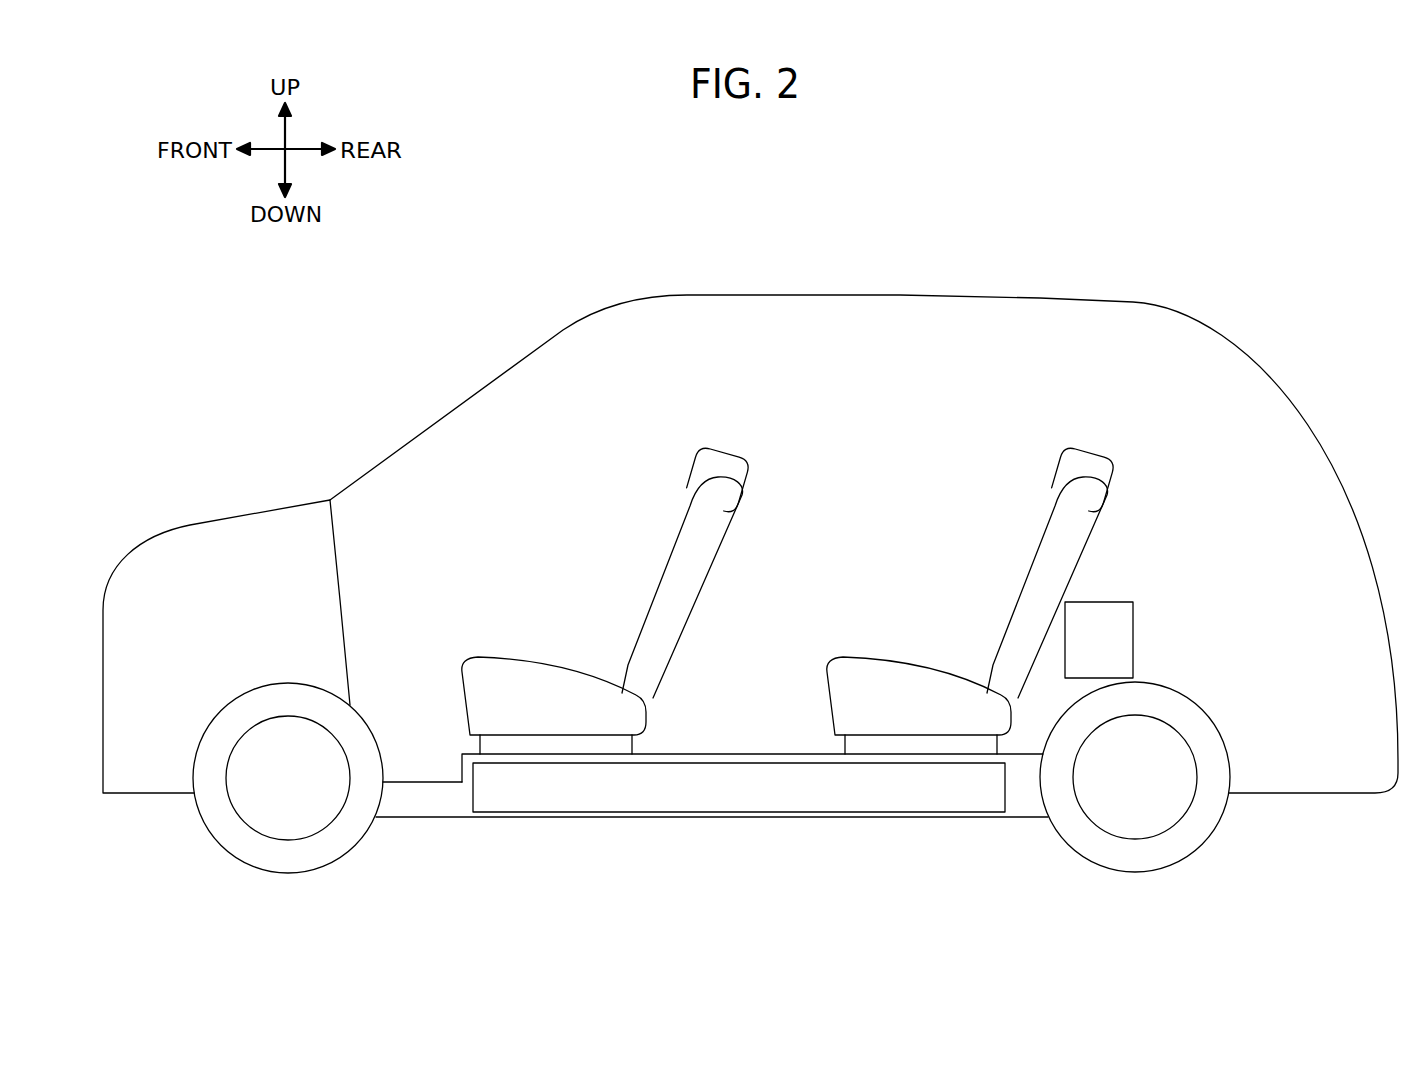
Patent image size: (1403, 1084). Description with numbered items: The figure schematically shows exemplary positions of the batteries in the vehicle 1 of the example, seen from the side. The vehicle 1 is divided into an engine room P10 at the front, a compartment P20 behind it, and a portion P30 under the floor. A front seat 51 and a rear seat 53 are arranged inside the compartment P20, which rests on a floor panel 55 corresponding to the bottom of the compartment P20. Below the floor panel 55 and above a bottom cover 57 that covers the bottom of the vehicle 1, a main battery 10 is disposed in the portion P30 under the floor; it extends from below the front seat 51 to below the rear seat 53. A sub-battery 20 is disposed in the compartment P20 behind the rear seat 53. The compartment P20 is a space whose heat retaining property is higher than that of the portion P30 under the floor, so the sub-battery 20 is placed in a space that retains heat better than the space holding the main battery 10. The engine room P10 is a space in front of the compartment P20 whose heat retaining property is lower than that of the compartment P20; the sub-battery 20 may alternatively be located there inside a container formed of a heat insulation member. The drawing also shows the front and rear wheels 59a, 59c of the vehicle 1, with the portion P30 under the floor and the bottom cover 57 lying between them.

The vehicle 1 is at (1156, 131).
The engine room P10 is at (207, 595).
The compartment P20 is at (1212, 433).
The portion under the floor P30 is at (1020, 795).
The main battery 10 is at (733, 795).
The sub-battery 20 is at (1117, 610).
The front seat 51 is at (716, 452).
The rear seat 53 is at (1084, 452).
The floor panel 55 is at (757, 754).
The bottom cover 57 is at (418, 818).
The front wheel 59a is at (288, 852).
The rear wheel 59c is at (1135, 852).